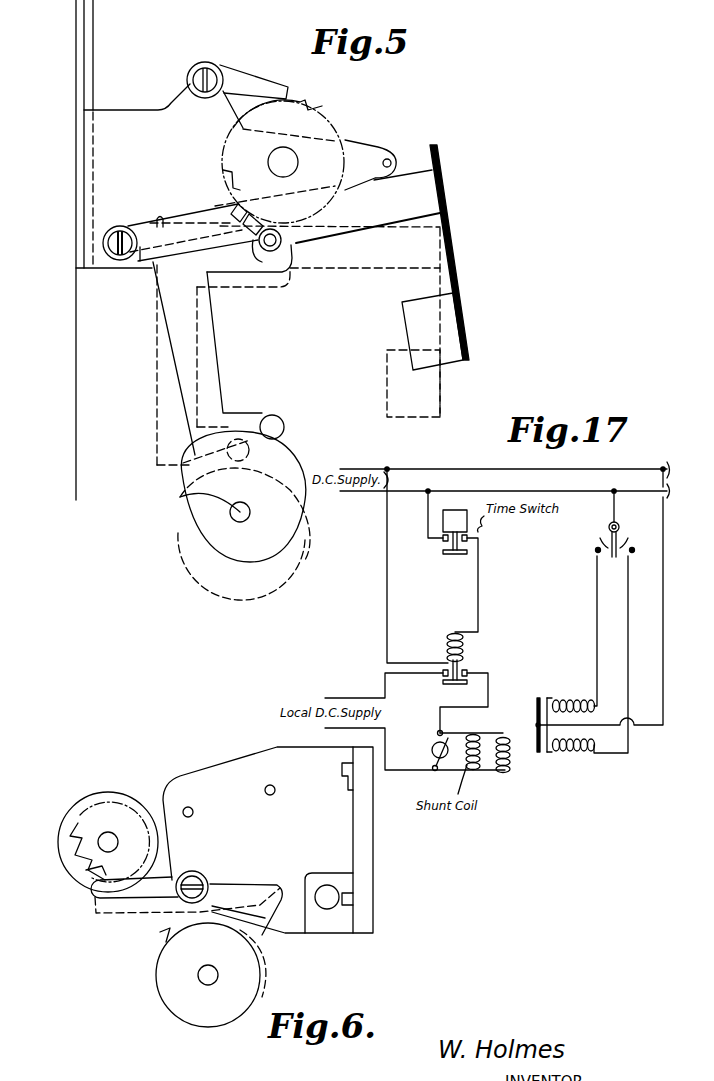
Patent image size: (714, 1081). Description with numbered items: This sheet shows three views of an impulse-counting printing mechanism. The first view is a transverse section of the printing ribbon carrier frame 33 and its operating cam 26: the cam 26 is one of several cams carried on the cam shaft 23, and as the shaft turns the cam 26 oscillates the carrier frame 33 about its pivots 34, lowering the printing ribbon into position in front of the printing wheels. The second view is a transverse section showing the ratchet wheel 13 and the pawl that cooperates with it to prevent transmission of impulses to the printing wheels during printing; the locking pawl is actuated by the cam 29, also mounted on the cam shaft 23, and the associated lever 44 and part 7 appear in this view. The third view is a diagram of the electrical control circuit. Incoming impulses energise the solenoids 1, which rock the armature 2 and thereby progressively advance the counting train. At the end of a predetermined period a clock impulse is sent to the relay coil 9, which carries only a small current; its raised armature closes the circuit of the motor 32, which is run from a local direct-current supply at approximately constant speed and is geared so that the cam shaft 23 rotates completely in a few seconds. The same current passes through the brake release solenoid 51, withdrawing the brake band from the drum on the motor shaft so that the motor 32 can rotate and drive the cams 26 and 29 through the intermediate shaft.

In FIG. 17, the solenoids 1 is at (579, 701).
In FIG. 17, the armature 2 is at (535, 723).
In FIG. 6, the ratchet wheel 7 is at (108, 832).
In FIG. 17, the relay electromagnet 9 is at (464, 636).
In FIG. 6, the ratchet wheel 13 is at (96, 867).
In FIG. 5, the cam shaft 23 is at (186, 510).
In FIG. 6, the cam shaft 23 is at (210, 968).
In FIG. 5, the cam 26 is at (287, 473).
In FIG. 6, the cam 29 is at (237, 990).
In FIG. 17, the motor 32 is at (430, 752).
In FIG. 5, the printing ribbon carrier frame 33 is at (406, 188).
In FIG. 5, the pivots 34 is at (122, 232).
In FIG. 6, the lever 44 is at (136, 905).
In FIG. 17, the brake release solenoid 51 is at (503, 772).